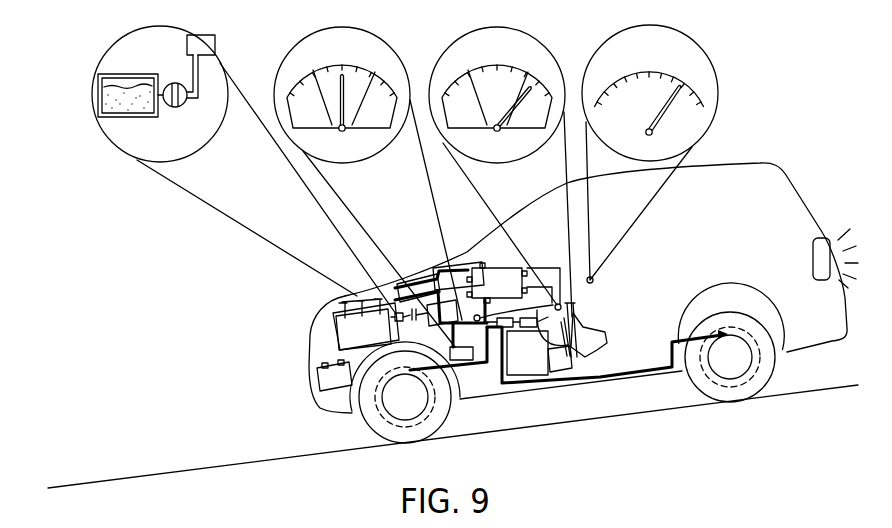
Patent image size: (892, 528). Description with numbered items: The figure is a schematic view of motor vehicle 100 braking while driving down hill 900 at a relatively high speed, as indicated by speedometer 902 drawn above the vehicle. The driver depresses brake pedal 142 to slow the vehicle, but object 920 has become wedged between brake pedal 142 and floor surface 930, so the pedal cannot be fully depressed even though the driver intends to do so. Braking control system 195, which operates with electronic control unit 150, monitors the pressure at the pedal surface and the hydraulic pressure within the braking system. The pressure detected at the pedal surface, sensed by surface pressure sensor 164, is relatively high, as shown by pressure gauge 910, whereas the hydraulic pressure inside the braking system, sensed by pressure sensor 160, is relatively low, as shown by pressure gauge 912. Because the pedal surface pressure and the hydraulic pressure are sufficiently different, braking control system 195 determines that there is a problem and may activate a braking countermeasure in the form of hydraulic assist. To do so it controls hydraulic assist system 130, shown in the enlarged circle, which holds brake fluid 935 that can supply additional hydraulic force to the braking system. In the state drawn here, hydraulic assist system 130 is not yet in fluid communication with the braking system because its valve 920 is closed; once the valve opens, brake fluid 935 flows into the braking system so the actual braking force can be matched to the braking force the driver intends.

The motor vehicle 100 is at (752, 163).
The hydraulic assist system 130 is at (120, 117).
The brake pedal 142 is at (546, 356).
The electronic control unit 150 is at (505, 272).
The pressure sensor 160 is at (553, 305).
The surface pressure sensor 164 is at (575, 355).
The braking control system 195 is at (493, 243).
The hill 900 is at (137, 477).
The speedometer 902 is at (687, 87).
The pressure gauge 910 is at (470, 73).
The pressure gauge 912 is at (305, 77).
The object 920 is at (182, 105).
The floor surface 930 is at (617, 372).
The brake fluid 935 is at (122, 92).